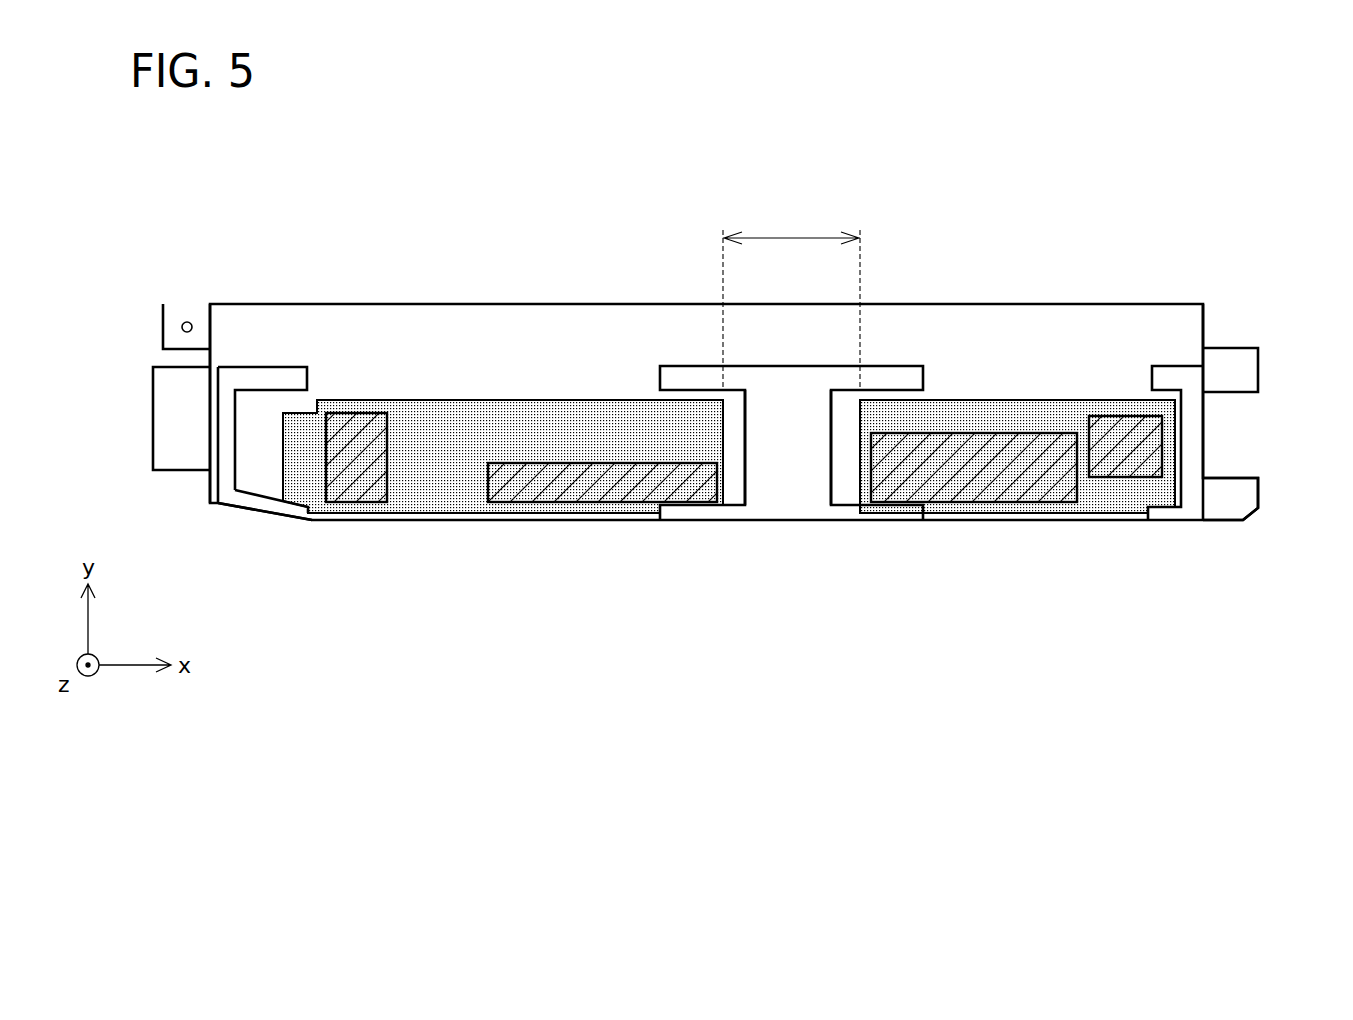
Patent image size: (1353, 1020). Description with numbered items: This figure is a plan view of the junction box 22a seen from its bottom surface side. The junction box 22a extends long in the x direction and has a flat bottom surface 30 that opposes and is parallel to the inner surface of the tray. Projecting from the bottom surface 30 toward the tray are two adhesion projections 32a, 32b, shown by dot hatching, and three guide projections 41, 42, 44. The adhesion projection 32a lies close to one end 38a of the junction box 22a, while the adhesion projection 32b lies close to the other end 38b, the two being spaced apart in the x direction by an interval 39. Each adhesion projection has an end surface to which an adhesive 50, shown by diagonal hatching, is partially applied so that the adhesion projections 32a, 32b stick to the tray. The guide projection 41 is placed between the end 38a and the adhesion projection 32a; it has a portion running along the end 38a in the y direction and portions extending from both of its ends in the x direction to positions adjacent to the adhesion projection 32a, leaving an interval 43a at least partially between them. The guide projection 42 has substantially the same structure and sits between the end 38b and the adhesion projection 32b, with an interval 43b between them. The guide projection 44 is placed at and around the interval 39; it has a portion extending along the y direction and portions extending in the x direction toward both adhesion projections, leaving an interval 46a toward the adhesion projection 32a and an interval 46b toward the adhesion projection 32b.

The junction box 22a is at (215, 196).
The bottom surface 30 is at (483, 338).
The adhesion projection 32a is at (447, 490).
The adhesion projection 32b is at (1097, 493).
The end of the junction box 38a is at (210, 484).
The end of the junction box 38b is at (1204, 325).
The interval 39 is at (791, 299).
The guide projection 41 is at (243, 500).
The guide projection 42 is at (1192, 498).
The interval 43a is at (253, 413).
The interval 43b is at (1179, 443).
The guide projection 44 is at (793, 487).
The interval 46a is at (733, 466).
The interval 46b is at (841, 467).
The adhesive 50 is at (358, 487).